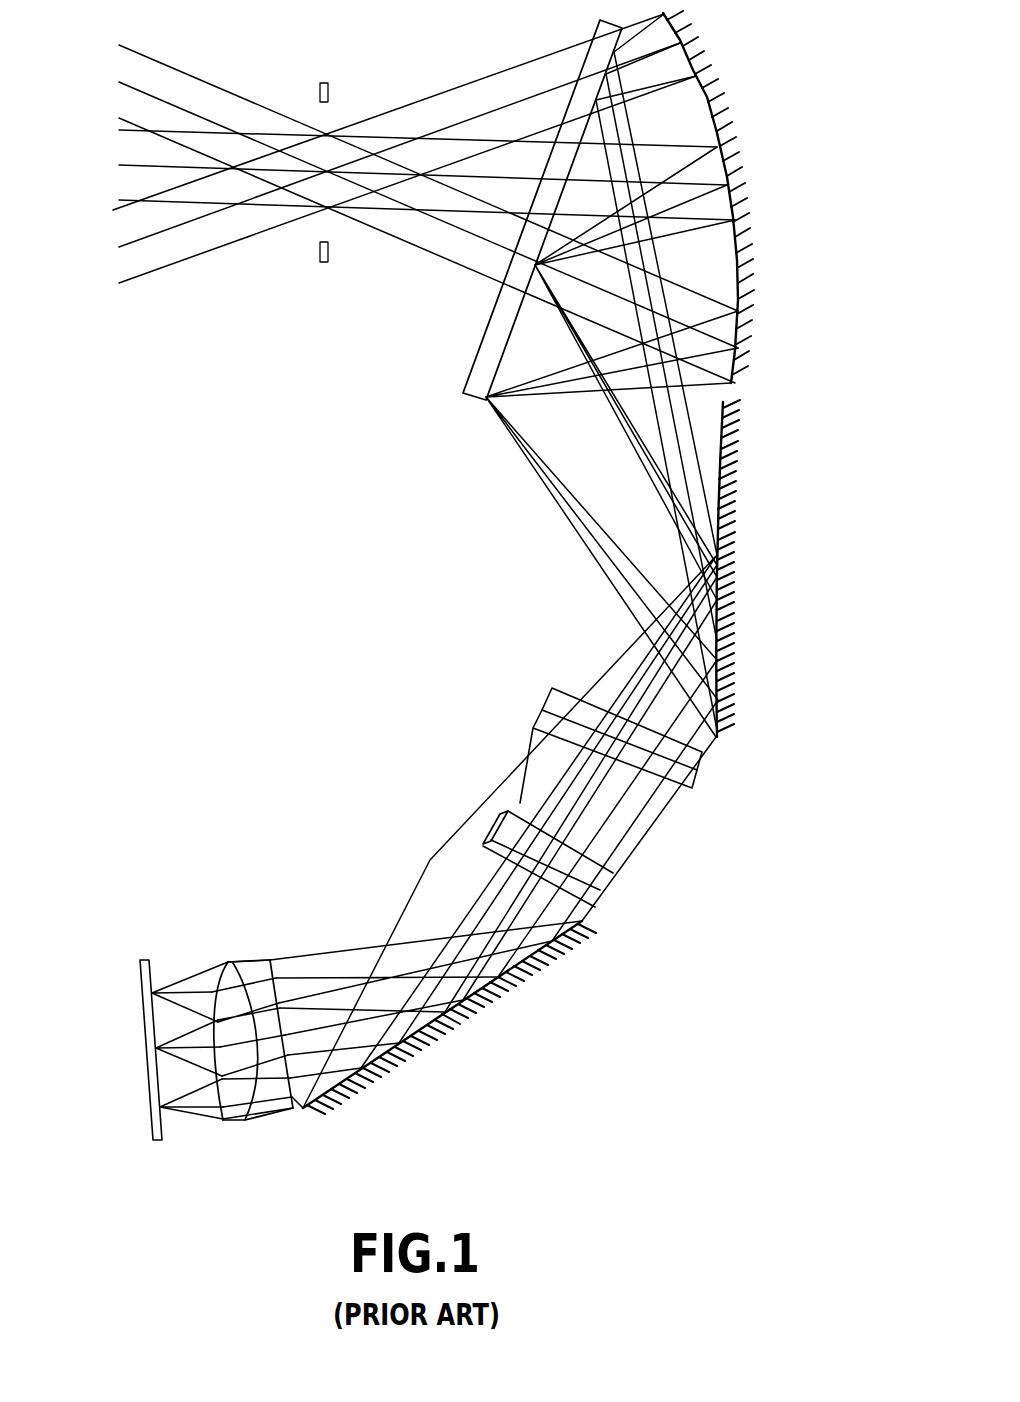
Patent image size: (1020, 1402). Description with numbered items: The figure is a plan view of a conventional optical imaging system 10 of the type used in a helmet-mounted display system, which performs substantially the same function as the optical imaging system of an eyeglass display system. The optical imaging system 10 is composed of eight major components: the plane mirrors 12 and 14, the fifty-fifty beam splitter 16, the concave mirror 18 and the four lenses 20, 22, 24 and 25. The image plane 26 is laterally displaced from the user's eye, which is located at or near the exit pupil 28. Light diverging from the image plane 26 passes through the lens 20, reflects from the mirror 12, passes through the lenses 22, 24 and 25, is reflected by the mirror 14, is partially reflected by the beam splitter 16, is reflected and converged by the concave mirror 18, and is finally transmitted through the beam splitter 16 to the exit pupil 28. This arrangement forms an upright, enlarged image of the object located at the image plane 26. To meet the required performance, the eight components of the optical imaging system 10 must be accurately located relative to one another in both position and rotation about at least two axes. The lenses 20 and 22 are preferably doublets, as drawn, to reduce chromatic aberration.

The optical imaging system 10 is at (437, 589).
The plane mirror 12 is at (541, 962).
The plane mirror 14 is at (726, 542).
The 50—50 beam splitter 16 is at (482, 341).
The concave mirror 18 is at (741, 145).
The lens 20 is at (229, 962).
The lens 22 is at (500, 814).
The lens 24 is at (541, 711).
The lens 25 is at (557, 686).
The image plane 26 is at (146, 960).
The exit pupil 28 is at (330, 90).